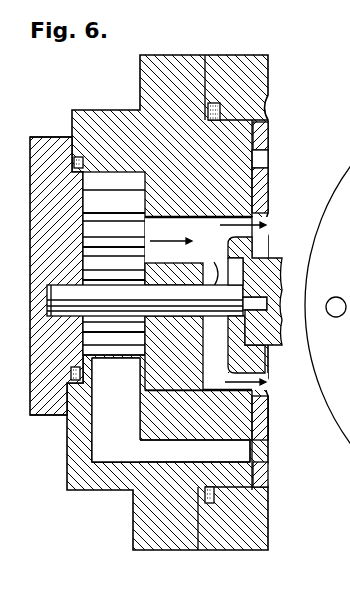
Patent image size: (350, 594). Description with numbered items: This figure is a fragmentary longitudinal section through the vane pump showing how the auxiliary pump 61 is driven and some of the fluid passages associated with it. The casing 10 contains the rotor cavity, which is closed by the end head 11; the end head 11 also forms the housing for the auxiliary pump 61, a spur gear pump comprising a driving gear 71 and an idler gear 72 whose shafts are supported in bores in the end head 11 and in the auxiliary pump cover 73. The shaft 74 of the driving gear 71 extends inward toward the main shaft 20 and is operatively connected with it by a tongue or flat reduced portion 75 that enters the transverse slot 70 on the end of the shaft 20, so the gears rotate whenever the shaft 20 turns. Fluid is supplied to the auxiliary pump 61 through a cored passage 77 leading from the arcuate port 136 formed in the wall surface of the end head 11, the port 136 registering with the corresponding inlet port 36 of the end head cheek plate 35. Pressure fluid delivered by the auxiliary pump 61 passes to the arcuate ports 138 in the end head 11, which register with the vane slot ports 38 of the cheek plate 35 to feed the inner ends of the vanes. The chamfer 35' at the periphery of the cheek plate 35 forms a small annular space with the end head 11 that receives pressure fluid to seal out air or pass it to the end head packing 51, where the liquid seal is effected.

The casing 10 is at (252, 56).
The end head 11 is at (165, 62).
The shaft 20 is at (273, 263).
The end head cheek plate 35 is at (283, 418).
The chamfer 35' is at (285, 301).
The inlet port 36 is at (262, 152).
The vane slot port 38 is at (268, 224).
The end head packing 51 is at (218, 108).
The auxiliary pump 61 is at (32, 152).
The transverse slot 70 is at (281, 323).
The driving gear 71 is at (100, 338).
The idler gear 72 is at (98, 207).
The auxiliary pump cover 73 is at (48, 137).
The shaft 74 is at (215, 352).
The tongue 75 is at (262, 304).
The cored passage 77 is at (135, 410).
The arcuate port 136 is at (175, 451).
The arcuate port 138 is at (247, 213).